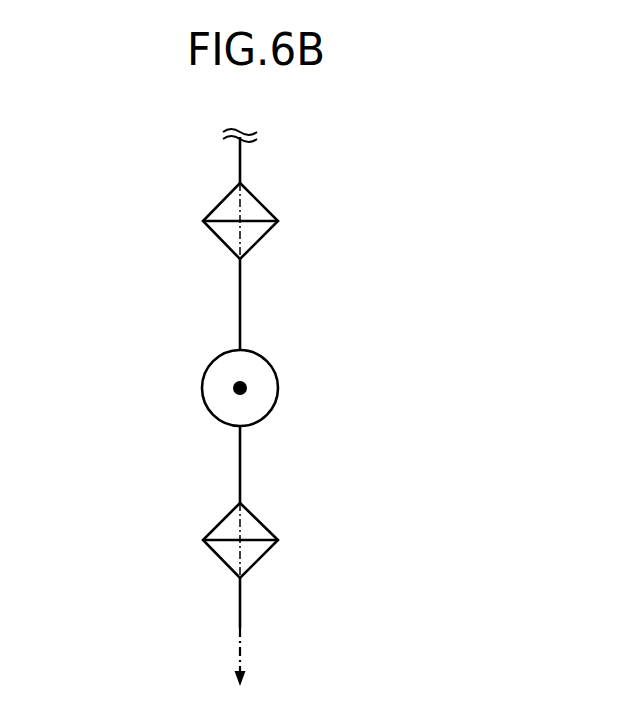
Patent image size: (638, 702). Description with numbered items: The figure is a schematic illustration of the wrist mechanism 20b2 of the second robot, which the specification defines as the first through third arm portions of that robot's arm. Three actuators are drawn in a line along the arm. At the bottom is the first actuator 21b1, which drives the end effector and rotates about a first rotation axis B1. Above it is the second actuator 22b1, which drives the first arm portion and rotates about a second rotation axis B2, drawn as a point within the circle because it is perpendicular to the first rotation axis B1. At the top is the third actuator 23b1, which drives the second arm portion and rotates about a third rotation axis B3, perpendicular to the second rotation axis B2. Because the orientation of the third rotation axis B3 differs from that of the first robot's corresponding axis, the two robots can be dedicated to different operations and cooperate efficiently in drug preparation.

The wrist mechanism 20b2 is at (308, 293).
The third actuator 23b1 is at (214, 210).
The second actuator 22b1 is at (212, 360).
The first actuator 21b1 is at (214, 530).
The third rotation axis B3 is at (238, 202).
The second rotation axis B2 is at (248, 387).
The first rotation axis B1 is at (240, 556).